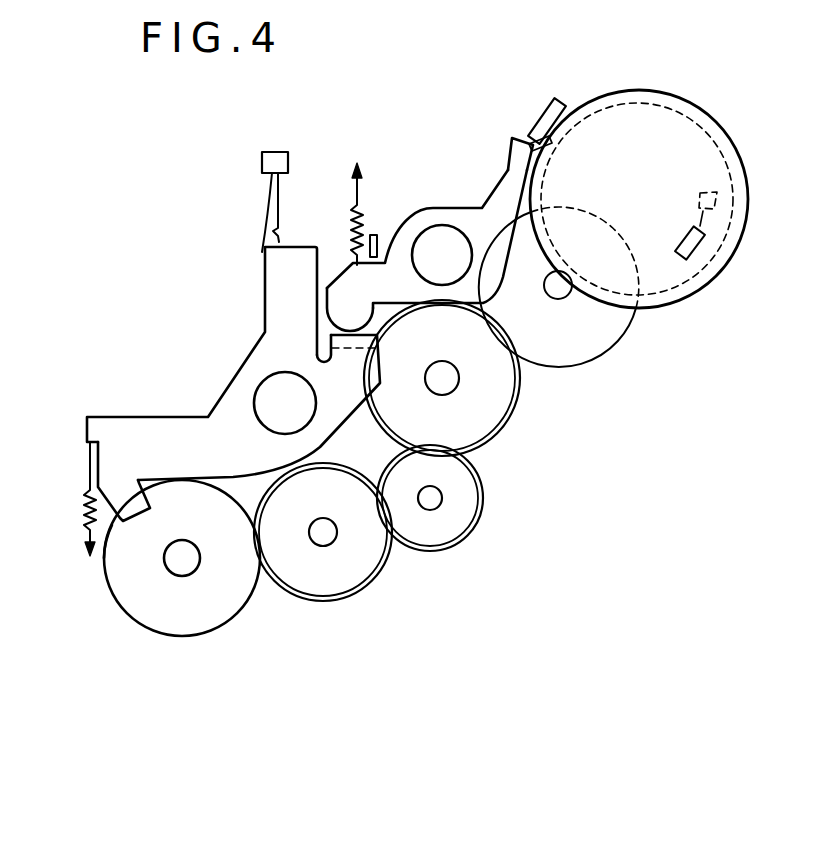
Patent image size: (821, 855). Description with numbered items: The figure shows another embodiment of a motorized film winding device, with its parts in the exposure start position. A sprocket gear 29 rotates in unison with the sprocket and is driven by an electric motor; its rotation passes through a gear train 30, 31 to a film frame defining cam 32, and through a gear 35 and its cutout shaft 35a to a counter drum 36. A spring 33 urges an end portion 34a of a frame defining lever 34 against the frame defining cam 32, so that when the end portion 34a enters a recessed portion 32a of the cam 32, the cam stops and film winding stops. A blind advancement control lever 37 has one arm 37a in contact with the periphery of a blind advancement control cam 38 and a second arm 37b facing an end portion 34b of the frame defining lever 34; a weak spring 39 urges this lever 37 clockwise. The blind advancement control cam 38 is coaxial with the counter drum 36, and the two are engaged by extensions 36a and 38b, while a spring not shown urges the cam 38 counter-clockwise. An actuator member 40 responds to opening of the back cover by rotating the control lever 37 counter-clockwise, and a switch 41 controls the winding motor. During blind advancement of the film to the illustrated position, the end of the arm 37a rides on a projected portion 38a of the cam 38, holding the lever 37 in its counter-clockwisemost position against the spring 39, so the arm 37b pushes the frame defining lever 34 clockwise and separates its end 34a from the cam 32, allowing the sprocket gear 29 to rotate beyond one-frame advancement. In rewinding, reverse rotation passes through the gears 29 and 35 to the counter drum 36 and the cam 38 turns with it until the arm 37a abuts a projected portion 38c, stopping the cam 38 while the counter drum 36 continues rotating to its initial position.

The sprocket gear 29 is at (492, 405).
The gear train gear 30 is at (463, 513).
The gear train gear 31 is at (348, 577).
The film frame defining cam 32 is at (217, 610).
The recessed portion 32a is at (113, 533).
The spring 33 is at (83, 522).
The frame defining lever 34 is at (230, 407).
The end portion 34a is at (125, 500).
The end portion 34b is at (332, 340).
The gear 35 is at (607, 337).
The cutout shaft 35a is at (559, 300).
The counter drum 36 is at (675, 295).
The extension 36a is at (715, 200).
The blind advancement control lever 37 is at (427, 222).
The arm 37a is at (518, 150).
The arm 37b is at (337, 310).
The blind advancement control cam 38 is at (708, 150).
The projected portion 38a is at (538, 118).
The extension 38b is at (717, 273).
The projected portion 38c is at (535, 133).
The weak spring 39 is at (350, 232).
The actuator member 40 is at (376, 235).
The switch 41 is at (281, 152).